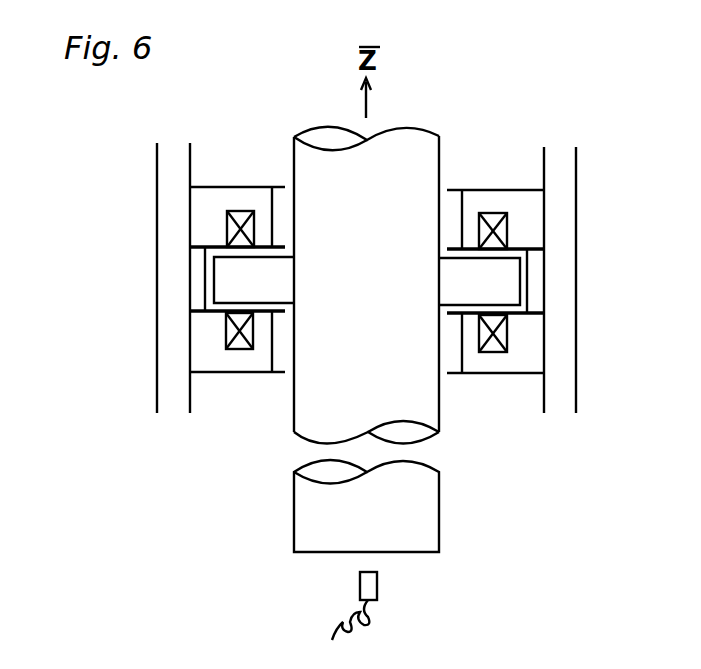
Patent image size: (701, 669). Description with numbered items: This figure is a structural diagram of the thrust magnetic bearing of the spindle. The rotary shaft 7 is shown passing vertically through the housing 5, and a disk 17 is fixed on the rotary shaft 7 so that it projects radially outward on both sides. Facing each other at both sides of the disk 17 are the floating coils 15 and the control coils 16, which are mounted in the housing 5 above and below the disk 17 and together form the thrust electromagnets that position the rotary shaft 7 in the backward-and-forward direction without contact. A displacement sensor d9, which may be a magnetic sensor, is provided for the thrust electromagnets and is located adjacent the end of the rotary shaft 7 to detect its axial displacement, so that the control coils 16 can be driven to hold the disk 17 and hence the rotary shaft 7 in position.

The housing 5 is at (172, 196).
The rotary shaft 7 is at (417, 174).
The floating coils 15 is at (228, 228).
The control coils 16 is at (215, 327).
The disk 17 is at (473, 285).
The displacement sensor d9 is at (370, 583).